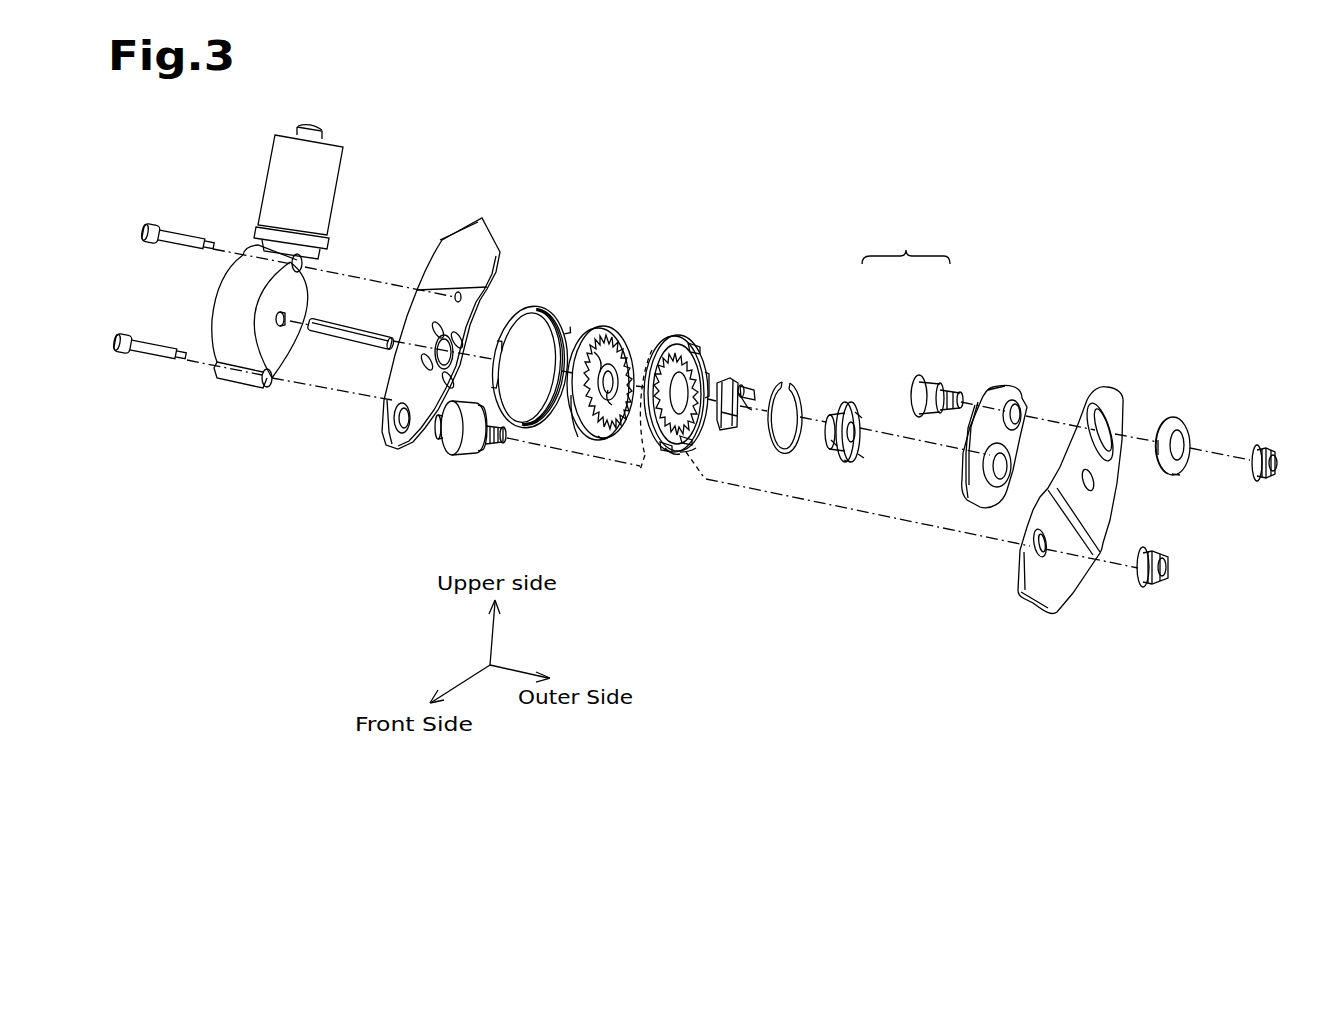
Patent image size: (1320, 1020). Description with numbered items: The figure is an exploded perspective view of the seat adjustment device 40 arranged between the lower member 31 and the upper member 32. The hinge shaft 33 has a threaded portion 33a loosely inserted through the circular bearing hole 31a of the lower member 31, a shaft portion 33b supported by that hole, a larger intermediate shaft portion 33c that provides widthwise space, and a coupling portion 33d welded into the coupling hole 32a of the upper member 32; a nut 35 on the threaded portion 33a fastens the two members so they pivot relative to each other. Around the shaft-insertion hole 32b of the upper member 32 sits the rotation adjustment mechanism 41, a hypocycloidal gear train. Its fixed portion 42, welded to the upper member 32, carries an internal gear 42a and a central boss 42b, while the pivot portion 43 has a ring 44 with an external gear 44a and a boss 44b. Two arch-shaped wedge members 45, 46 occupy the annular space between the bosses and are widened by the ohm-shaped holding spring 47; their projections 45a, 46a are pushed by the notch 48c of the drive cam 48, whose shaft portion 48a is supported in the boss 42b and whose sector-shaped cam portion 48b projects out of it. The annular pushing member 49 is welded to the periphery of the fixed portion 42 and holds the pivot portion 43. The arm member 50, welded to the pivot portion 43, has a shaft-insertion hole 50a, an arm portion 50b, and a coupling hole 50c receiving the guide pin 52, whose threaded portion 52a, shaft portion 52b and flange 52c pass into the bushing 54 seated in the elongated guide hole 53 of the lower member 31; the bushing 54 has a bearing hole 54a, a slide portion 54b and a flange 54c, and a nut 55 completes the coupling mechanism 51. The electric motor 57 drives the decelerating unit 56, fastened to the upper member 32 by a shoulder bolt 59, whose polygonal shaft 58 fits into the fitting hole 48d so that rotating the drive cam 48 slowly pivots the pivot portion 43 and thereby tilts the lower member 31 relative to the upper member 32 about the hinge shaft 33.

The lower member 31 is at (1041, 496).
The bearing hole 31a is at (1033, 546).
The upper member 32 is at (424, 318).
The coupling hole 32a is at (394, 420).
The shaft-insertion hole 32b is at (452, 343).
The hinge shaft 33 is at (463, 461).
The threaded portion 33a is at (505, 440).
The shaft portion 33b is at (484, 452).
The intermediate shaft portion 33c is at (450, 452).
The coupling portion 33d is at (438, 432).
The nut 35 is at (1152, 588).
The seat adjustment device 40 is at (906, 242).
The rotation adjustment mechanism 41 is at (847, 323).
The fixed portion 42 is at (590, 404).
The internal gear 42a is at (605, 441).
The boss 42b is at (578, 428).
The pivot portion 43 is at (669, 414).
The ring 44 is at (652, 450).
The external gear 44a is at (682, 460).
The boss 44b is at (672, 470).
The wedge member 45 is at (722, 400).
The projection 45a is at (731, 414).
The wedge member 46 is at (761, 414).
The projection 46a is at (752, 412).
The holding spring 47 is at (787, 384).
The drive cam 48 is at (846, 450).
The shaft portion 48a is at (832, 443).
The cam portion 48b is at (848, 468).
The notch 48c is at (860, 420).
The fitting hole 48d is at (866, 454).
The pushing member 49 is at (526, 318).
The arm member 50 is at (993, 420).
The shaft-insertion hole 50a is at (993, 467).
The arm portion 50b is at (1000, 390).
The coupling hole 50c is at (1020, 402).
The coupling mechanism 51 is at (957, 329).
The guide pin 52 is at (908, 410).
The threaded portion 52a is at (955, 412).
The shaft portion 52b is at (934, 418).
The flange 52c is at (914, 385).
The guide hole 53 is at (1105, 392).
The bushing 54 is at (1182, 451).
The bearing hole 54a is at (1188, 450).
The slide portion 54b is at (1158, 456).
The flange 54c is at (1176, 477).
The nut 55 is at (1264, 445).
The decelerating unit 56 is at (218, 302).
The electric motor 57 is at (275, 155).
The shaft 58 is at (352, 327).
The shoulder bolt 59 is at (173, 237).